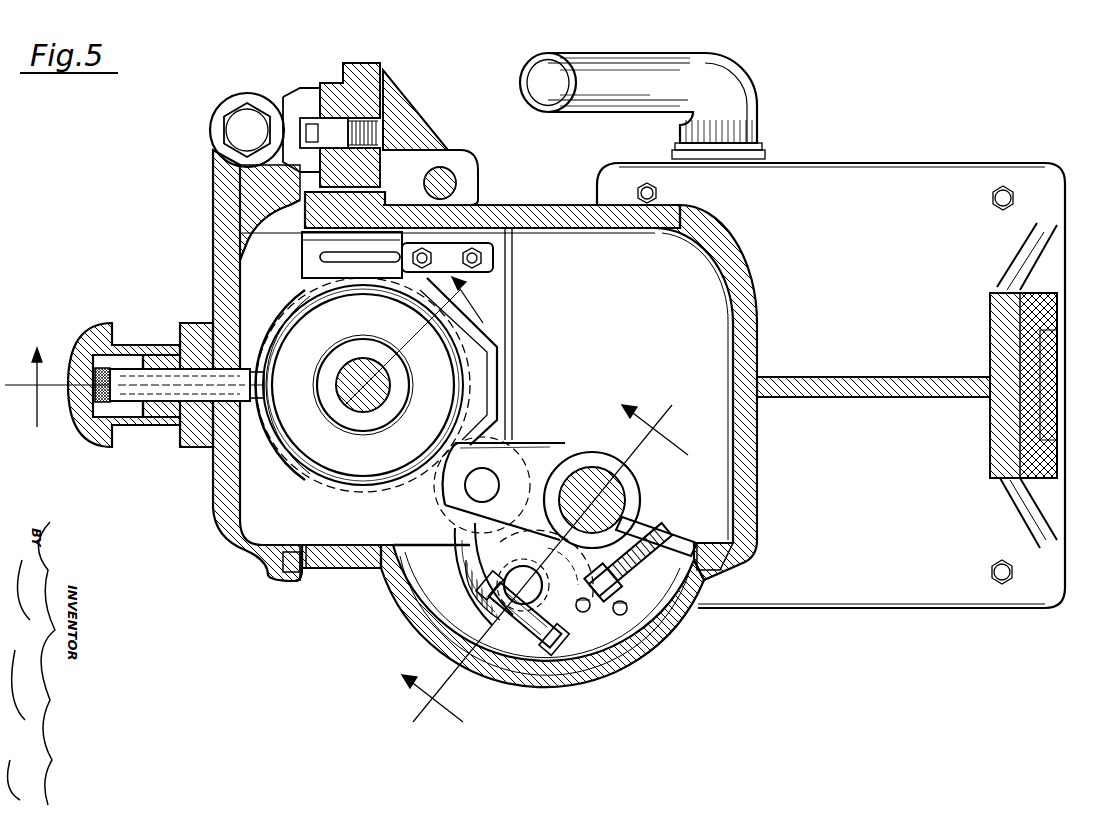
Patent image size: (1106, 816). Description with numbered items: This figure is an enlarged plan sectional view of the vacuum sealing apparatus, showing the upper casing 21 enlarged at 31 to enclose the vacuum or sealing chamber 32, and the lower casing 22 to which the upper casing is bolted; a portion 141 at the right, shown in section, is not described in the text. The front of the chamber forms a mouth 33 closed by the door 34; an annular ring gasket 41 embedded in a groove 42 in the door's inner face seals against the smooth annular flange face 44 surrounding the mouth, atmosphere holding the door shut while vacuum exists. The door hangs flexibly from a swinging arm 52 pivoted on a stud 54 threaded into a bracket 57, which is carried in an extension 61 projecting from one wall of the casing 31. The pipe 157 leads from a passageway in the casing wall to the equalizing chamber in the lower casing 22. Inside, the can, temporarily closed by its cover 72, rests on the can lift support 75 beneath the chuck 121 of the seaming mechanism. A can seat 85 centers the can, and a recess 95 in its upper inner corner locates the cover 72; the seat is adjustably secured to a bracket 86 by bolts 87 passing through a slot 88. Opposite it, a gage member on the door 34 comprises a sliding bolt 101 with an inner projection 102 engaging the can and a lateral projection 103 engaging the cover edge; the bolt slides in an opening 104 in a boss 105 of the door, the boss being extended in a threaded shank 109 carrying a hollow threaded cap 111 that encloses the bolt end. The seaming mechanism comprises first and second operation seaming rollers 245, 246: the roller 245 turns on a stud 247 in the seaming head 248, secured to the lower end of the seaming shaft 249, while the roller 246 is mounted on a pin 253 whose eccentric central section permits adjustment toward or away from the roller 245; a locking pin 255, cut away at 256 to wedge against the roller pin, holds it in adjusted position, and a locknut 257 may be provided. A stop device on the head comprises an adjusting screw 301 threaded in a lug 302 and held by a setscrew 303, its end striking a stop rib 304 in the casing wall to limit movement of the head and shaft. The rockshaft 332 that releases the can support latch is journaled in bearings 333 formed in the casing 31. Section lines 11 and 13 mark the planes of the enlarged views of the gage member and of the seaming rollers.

The section line 11- 11 is at (255, 370).
The section line 13- 13 is at (551, 570).
The upper casing 21 is at (882, 378).
The lower casing 22 is at (880, 163).
The casing enlargement 31 is at (743, 248).
The vacuum chamber 32 is at (562, 219).
The mouth 33 is at (336, 560).
The door 34 is at (213, 488).
The annular ring gasket 41 is at (283, 574).
The groove 42 is at (280, 560).
The annular flange face 44 is at (304, 581).
The swinging arm 52 is at (225, 188).
The stud 54 is at (247, 130).
The bracket 57 is at (312, 100).
The extension 61 is at (392, 88).
The cover 72 is at (280, 441).
The can lift support 75 is at (292, 470).
The can seat 85 is at (493, 368).
The bracket 86 is at (320, 256).
The bolts 87 is at (420, 264).
The slot 88 is at (368, 246).
The recess 95 is at (490, 384).
The sliding bolt 101 is at (187, 370).
The inner projection 102 is at (262, 386).
The lateral projection 103 is at (262, 378).
The opening 104 is at (163, 363).
The boss 105 is at (208, 336).
The threaded shank 109 is at (152, 418).
The hollow threaded cap 111 is at (90, 334).
The chuck 121 is at (363, 385).
The plate boss 141 is at (1057, 455).
The pipe 157 is at (622, 53).
The first operation seaming roller 245 is at (490, 438).
The second operation seaming roller 246 is at (475, 566).
The stud 247 is at (491, 481).
The seaming head 248 is at (547, 565).
The seaming shaft 249 is at (626, 500).
The pin 253 is at (523, 568).
The locking pin 255 is at (560, 638).
The cut-away 256 is at (482, 602).
The locknut 257 is at (548, 655).
The adjusting screw 301 is at (645, 556).
The lug 302 is at (632, 588).
The setscrew 303 is at (628, 607).
The stop rib 304 is at (676, 540).
The rockshaft 332 is at (455, 176).
The bearings 333 is at (423, 158).